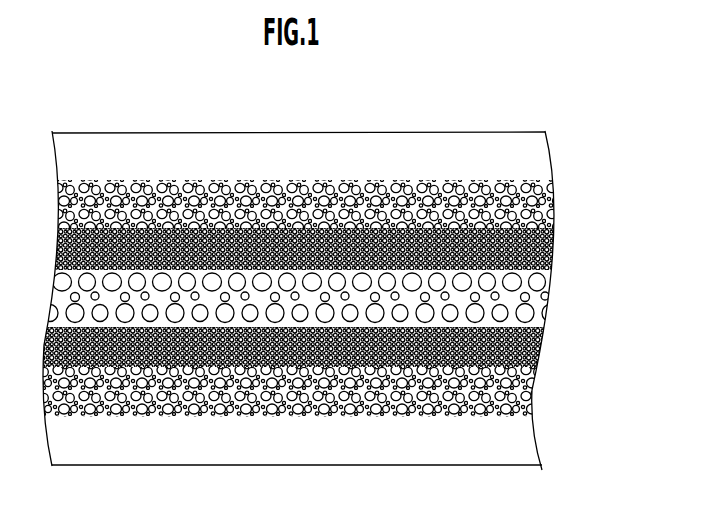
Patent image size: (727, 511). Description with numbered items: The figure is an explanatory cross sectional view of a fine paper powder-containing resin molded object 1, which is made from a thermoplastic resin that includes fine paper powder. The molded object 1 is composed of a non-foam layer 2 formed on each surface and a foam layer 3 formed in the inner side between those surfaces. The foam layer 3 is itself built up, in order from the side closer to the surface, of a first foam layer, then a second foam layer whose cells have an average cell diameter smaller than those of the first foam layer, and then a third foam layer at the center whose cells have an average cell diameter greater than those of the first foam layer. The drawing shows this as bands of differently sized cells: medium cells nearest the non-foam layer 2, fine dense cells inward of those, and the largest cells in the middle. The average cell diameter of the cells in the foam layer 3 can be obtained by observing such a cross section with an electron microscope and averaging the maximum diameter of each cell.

The fine paper powder-containing resin molded object 1 is at (586, 73).
The non-foam layer 2 is at (572, 161).
The foam layer 3 is at (375, 298).